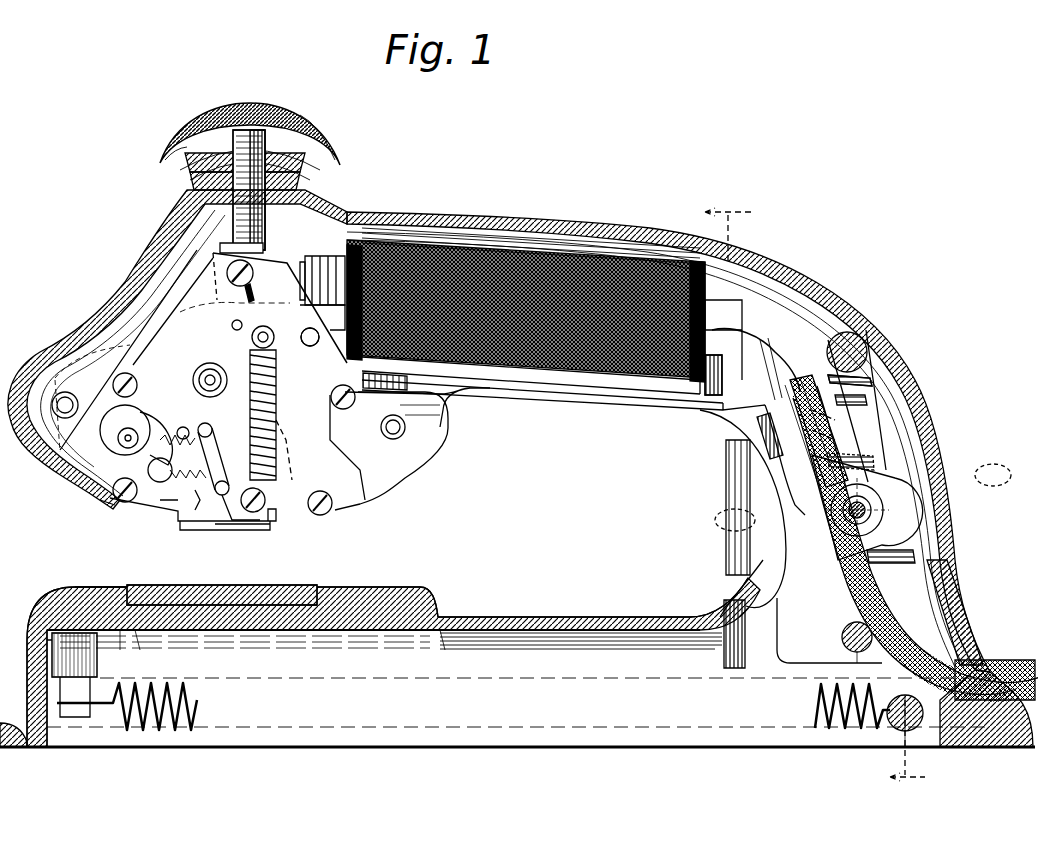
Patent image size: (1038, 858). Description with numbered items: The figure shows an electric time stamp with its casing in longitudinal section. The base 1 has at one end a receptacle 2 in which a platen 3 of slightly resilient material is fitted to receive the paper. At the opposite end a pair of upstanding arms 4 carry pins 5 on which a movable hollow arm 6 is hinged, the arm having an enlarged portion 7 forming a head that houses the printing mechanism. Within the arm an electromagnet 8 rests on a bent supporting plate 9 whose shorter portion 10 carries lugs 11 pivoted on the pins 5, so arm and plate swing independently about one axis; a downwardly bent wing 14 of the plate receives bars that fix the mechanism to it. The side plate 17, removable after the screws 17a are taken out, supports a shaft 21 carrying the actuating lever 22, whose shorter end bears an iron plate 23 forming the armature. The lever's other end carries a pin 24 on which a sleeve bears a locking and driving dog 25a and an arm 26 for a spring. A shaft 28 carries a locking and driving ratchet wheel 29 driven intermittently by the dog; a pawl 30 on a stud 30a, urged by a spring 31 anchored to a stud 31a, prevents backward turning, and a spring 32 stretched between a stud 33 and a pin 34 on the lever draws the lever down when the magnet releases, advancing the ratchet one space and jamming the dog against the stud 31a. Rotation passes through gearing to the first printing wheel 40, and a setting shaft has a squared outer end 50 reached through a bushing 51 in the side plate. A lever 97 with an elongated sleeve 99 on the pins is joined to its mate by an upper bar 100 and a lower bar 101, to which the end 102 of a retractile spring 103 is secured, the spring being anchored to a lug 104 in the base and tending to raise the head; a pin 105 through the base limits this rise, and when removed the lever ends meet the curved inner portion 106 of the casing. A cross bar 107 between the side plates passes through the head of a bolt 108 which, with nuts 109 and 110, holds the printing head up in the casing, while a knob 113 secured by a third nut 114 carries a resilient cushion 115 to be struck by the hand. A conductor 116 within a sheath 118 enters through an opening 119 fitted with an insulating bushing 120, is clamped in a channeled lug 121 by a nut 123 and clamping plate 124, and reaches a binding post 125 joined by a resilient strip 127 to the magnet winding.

The base 1 is at (543, 612).
The receptacle 2 is at (380, 587).
The platen 3 is at (305, 592).
The upstanding arms 4 is at (942, 522).
The pins 5 is at (932, 556).
The movable hollow arm 6 is at (488, 218).
The enlarged portion forming a head 7 is at (158, 243).
The electromagnet 8 is at (567, 277).
The bent supporting plate 9 is at (612, 385).
The shorter portion of the plate 10 is at (765, 452).
The lugs 11 is at (935, 470).
The wing or lug 14 is at (458, 398).
The side plate 17 is at (400, 468).
The screws 17a is at (108, 342).
The shaft 21 is at (280, 400).
The actuating lever 22 is at (322, 266).
The iron plate (armature) 23 is at (332, 270).
The pin 24 is at (128, 437).
The locking and driving dog 25a is at (105, 500).
The arm 26 is at (100, 431).
The shaft 28 is at (200, 414).
The locking and driving ratchet wheel 29 is at (172, 522).
The pawl 30 is at (200, 500).
The stud 30a is at (228, 500).
The spring 31 is at (185, 530).
The stud 31a is at (160, 483).
The spring 32 is at (285, 462).
The stud 33 is at (266, 499).
The pin 34 is at (272, 265).
The first printing wheel 40 is at (222, 528).
The outer end of setting shaft 50 is at (192, 368).
The bushing 51 is at (160, 292).
The lever 97 is at (875, 372).
The elongated sleeve 99 is at (945, 490).
The bar 100 is at (870, 330).
The bar 101 is at (945, 728).
The end of retractile spring 102 is at (893, 730).
The retractile spring 103 is at (203, 700).
The lug 104 is at (72, 675).
The pin 105 is at (842, 635).
The curved inner portion of the base casing 106 is at (727, 600).
The cross bar 107 is at (242, 300).
The bolt 108 is at (230, 256).
The nut 109 is at (200, 165).
The nut 110 is at (200, 180).
The knob 113 is at (218, 115).
The third nut 114 is at (185, 125).
The resilient cushion 115 is at (302, 116).
The conductor 116 is at (787, 383).
The sheath 118 is at (870, 578).
The opening 119 is at (893, 628).
The insulating bushing 120 is at (965, 640).
The lug 121 is at (800, 513).
The nut 123 is at (875, 430).
The clamping plate 124 is at (885, 455).
The binding post 125 is at (828, 412).
The resilient strip 127 is at (725, 328).